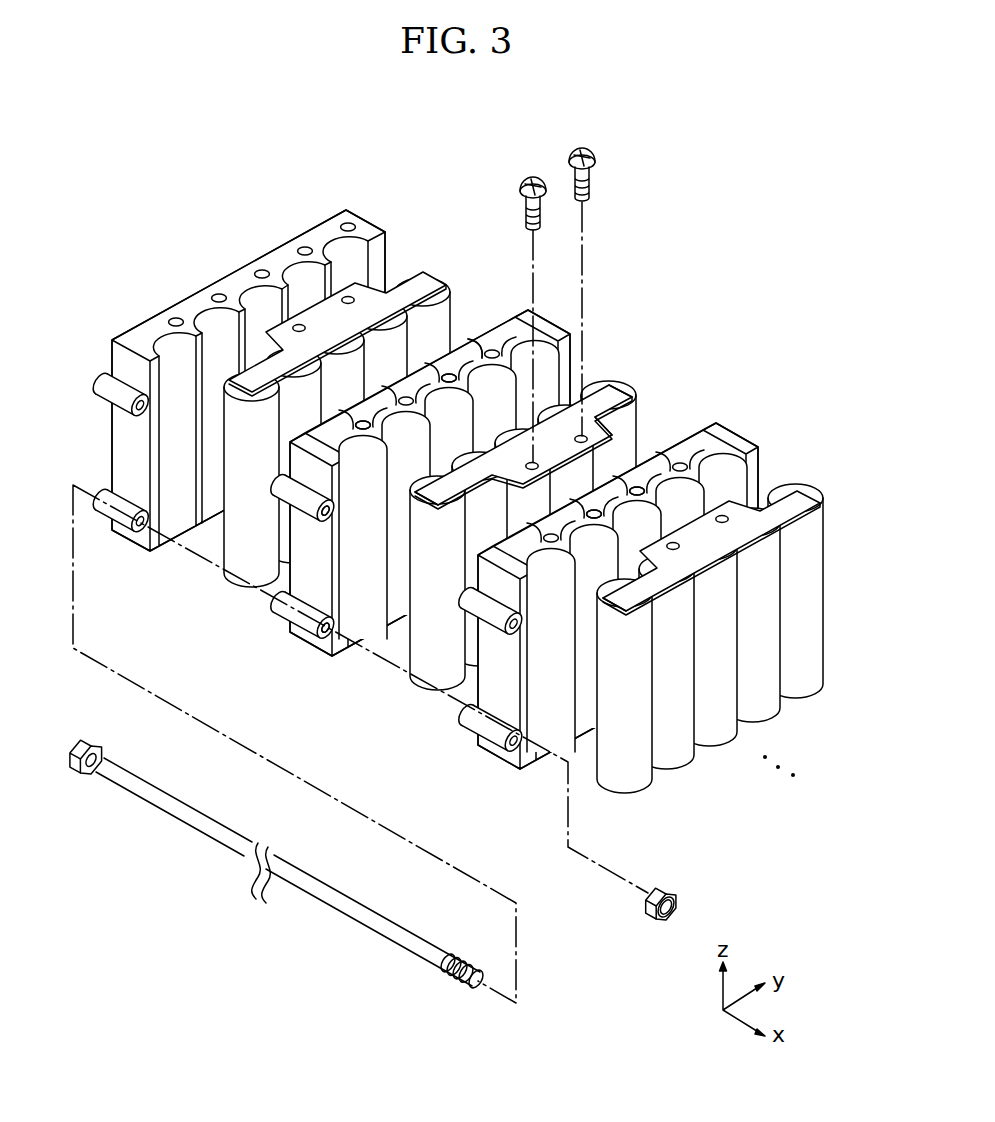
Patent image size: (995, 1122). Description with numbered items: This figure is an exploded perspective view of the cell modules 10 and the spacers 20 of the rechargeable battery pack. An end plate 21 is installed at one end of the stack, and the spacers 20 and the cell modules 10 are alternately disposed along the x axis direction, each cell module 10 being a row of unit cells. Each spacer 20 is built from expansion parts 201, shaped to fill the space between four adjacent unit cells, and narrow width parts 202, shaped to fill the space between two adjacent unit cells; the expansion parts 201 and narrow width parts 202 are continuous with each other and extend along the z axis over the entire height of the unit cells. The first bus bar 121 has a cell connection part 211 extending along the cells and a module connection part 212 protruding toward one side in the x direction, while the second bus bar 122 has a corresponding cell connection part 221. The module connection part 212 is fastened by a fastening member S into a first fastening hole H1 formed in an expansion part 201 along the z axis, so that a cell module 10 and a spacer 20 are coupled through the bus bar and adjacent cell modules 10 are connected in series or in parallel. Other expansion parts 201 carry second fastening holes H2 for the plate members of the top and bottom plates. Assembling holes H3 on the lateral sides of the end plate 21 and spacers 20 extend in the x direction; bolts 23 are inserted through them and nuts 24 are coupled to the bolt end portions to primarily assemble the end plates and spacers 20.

The cell module 10 is at (425, 273).
The first bus bar 121 is at (428, 503).
The second bus bar 122 is at (612, 600).
The spacer 20 is at (556, 318).
The expansion part 201 is at (472, 340).
The narrow width part 202 is at (450, 373).
The end plate 21 is at (363, 220).
The cell connection part 211 is at (608, 384).
The module connection part 212 is at (610, 434).
The cell connection part 221 is at (672, 585).
The bolt 23 is at (180, 826).
The nut 24 is at (684, 902).
The fastening member S is at (597, 177).
The first fastening hole H1 is at (640, 486).
The second fastening hole H2 is at (356, 427).
The assembling hole H3 is at (326, 515).